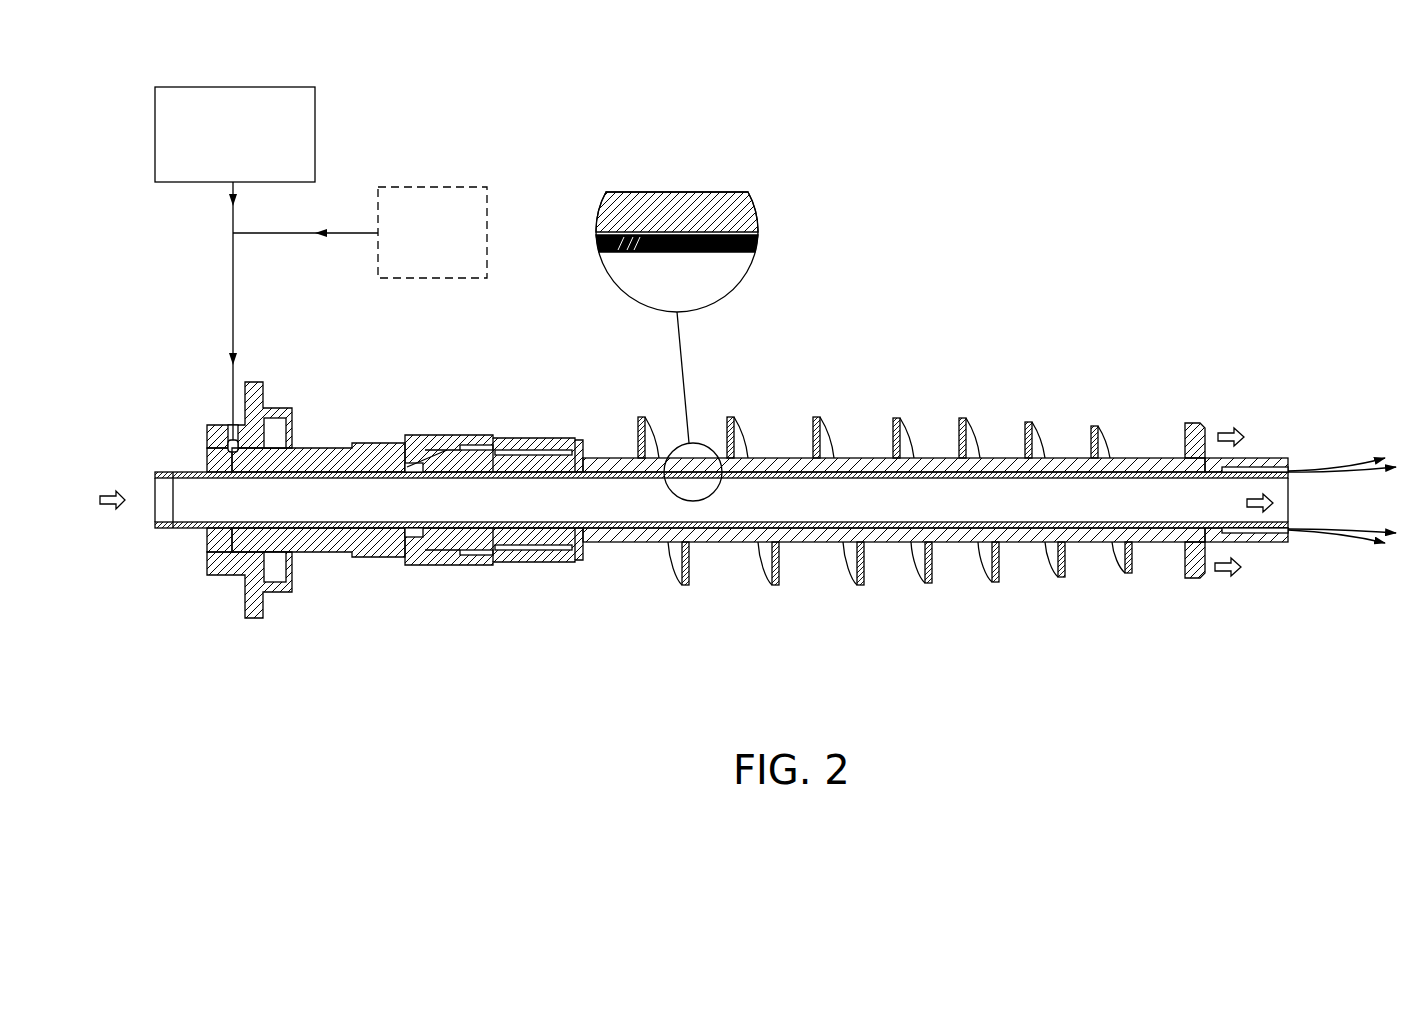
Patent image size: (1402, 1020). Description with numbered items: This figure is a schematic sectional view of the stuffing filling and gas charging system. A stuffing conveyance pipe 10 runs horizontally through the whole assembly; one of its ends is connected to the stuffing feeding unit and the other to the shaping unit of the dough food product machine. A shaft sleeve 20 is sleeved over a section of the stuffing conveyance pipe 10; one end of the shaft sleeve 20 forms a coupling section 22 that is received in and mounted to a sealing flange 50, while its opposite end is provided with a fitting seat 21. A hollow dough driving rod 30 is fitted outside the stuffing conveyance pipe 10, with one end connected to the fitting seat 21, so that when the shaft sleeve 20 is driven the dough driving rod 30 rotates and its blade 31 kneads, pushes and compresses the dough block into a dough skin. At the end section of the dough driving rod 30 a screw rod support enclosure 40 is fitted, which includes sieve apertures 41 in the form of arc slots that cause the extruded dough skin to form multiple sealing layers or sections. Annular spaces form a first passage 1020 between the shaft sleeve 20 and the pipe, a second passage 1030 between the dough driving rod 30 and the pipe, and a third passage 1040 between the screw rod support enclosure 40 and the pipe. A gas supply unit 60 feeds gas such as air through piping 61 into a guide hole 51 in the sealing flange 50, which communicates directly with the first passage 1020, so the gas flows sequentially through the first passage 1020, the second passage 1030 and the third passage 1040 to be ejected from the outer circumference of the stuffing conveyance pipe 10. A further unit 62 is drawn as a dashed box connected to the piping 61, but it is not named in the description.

The stuffing conveyance pipe 10 is at (162, 469).
The shaft sleeve 20 is at (453, 428).
The fitting seat 21 is at (515, 553).
The coupling section 22 is at (310, 553).
The first passage 1020 is at (446, 453).
The dough driving rod 30 is at (894, 408).
The blade 31 is at (967, 420).
The second passage 1030 is at (707, 232).
The screw rod support enclosure 40 is at (1277, 470).
The sieve apertures 41 is at (1185, 442).
The third passage 1040 is at (1263, 458).
The sealing flange 50 is at (294, 404).
The guide hole 51 is at (229, 440).
The gas supply unit 60 is at (307, 110).
The piping 61 is at (233, 313).
The controller 62 is at (487, 215).